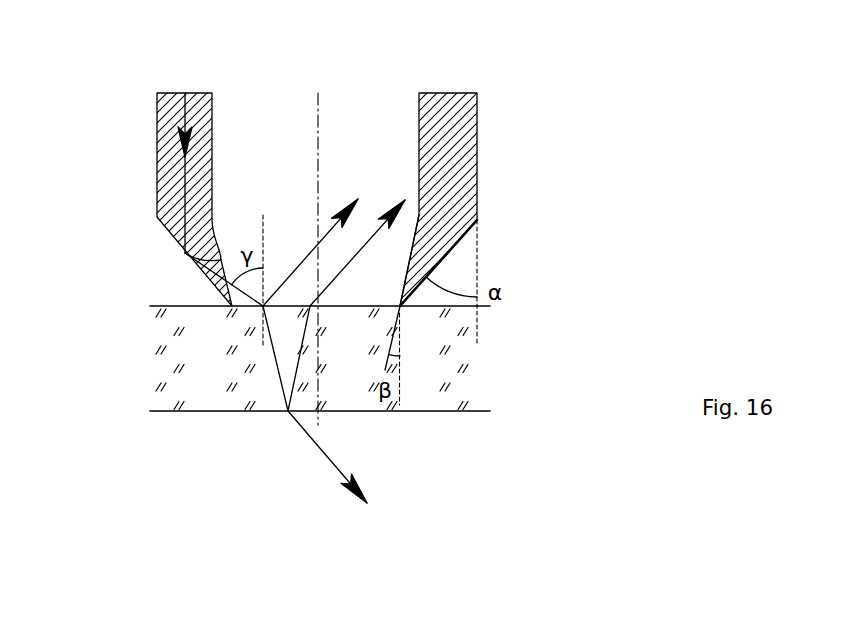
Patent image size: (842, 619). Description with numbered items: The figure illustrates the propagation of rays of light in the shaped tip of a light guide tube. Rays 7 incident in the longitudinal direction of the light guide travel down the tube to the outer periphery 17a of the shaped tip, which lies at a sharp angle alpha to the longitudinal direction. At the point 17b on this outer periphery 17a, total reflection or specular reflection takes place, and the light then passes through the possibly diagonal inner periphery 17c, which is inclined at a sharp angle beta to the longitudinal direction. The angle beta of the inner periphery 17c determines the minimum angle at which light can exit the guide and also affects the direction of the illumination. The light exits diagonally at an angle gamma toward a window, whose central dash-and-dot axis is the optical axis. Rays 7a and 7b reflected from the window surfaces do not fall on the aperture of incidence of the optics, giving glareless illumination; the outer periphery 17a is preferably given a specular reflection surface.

The rays of light 7 is at (187, 195).
The ray reflected from window surface 7a is at (358, 199).
The ray reflected from window surface 7b is at (405, 200).
The outer periphery of the shaped tip 17a is at (457, 243).
The point of total or specular reflection 17b is at (185, 253).
The inner periphery of the shaped tip 17c is at (412, 258).